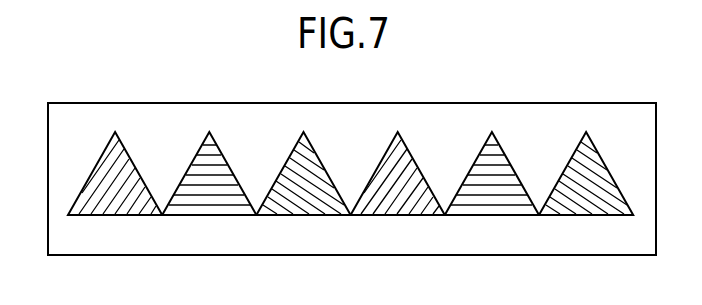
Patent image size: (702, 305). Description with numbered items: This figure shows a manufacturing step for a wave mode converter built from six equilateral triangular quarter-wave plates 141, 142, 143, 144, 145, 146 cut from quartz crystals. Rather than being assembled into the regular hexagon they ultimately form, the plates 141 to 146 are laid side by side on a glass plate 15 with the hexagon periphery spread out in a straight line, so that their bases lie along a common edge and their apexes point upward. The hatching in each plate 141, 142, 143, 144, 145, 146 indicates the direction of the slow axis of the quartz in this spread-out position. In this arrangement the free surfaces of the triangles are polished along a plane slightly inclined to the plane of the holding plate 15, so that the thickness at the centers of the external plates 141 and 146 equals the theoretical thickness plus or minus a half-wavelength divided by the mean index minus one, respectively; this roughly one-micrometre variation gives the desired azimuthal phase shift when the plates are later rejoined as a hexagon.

The glass plate 15 is at (613, 112).
The equilateral triangular quarter-wave plate 141 is at (117, 200).
The equilateral triangular quarter-wave plate 142 is at (215, 202).
The equilateral triangular quarter-wave plate 143 is at (307, 202).
The equilateral triangular quarter-wave plate 144 is at (402, 202).
The equilateral triangular quarter-wave plate 145 is at (499, 203).
The equilateral triangular quarter-wave plate 146 is at (592, 203).